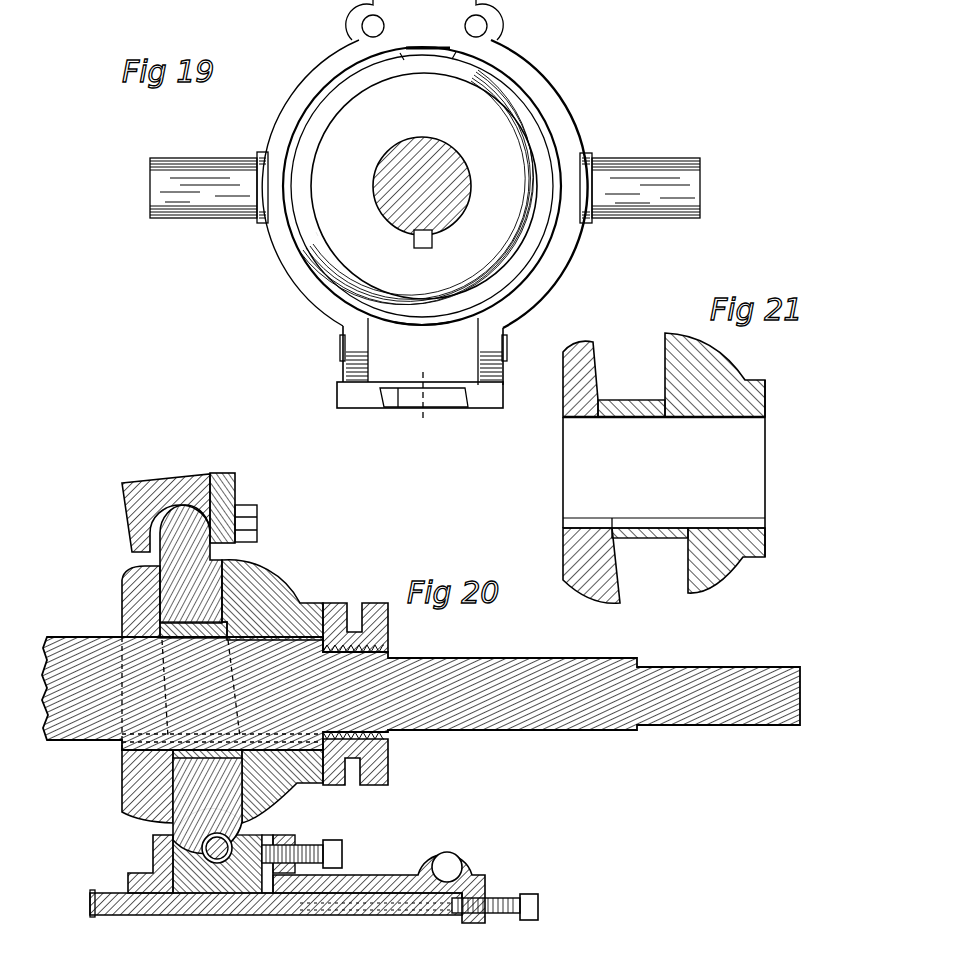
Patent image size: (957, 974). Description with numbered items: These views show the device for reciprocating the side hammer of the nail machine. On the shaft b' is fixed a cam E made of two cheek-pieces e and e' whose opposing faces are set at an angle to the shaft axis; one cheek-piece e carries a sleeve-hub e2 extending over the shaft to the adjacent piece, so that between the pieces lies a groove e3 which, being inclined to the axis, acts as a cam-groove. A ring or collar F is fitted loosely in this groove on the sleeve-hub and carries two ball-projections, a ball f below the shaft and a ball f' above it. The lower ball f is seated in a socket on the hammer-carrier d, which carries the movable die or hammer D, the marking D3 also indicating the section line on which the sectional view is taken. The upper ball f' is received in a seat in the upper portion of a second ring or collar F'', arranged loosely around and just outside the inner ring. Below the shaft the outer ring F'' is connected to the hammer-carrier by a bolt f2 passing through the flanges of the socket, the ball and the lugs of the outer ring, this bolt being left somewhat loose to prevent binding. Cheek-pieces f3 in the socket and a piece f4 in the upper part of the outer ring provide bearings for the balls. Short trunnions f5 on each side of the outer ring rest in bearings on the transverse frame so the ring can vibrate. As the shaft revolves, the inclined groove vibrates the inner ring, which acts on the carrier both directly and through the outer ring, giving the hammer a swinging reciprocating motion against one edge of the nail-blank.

In FIG. 19, the ring or collar F is at (424, 164).
In FIG. 20, the ring or collar F is at (161, 699).
In FIG. 20, the second ring or collar F'' is at (136, 513).
In FIG. 19, the upper ball-projection f' is at (379, 41).
In FIG. 20, the upper ball-projection f' is at (185, 489).
In FIG. 19, the bolt f2 is at (343, 352).
In FIG. 20, the bolt f2 is at (225, 860).
In FIG. 19, the cheek-pieces f3 is at (423, 351).
In FIG. 20, the cheek-pieces f3 is at (153, 860).
In FIG. 20, the bearing piece f4 is at (212, 488).
In FIG. 19, the short trunnions f5 is at (425, 175).
In FIG. 19, the lower ball-projection f is at (463, 354).
In FIG. 20, the lower ball-projection f is at (207, 888).
In FIG. 19, the shaft b' is at (438, 192).
In FIG. 20, the shaft b' is at (421, 708).
In FIG. 20, the cheek-piece e is at (272, 687).
In FIG. 21, the cheek-piece e is at (664, 459).
In FIG. 19, the cheek-piece e' is at (315, 285).
In FIG. 20, the cheek-piece e' is at (132, 694).
In FIG. 21, the cheek-piece e' is at (591, 460).
In FIG. 21, the sleeve-hub e2 is at (631, 394).
In FIG. 21, the cam-groove e3 is at (650, 552).
In FIG. 20, the cam E is at (344, 672).
In FIG. 20, the hammer-carrier d is at (370, 883).
In FIG. 20, the movable die or hammer D is at (90, 900).
In FIG. 19, the movable die or hammer D3 is at (420, 398).